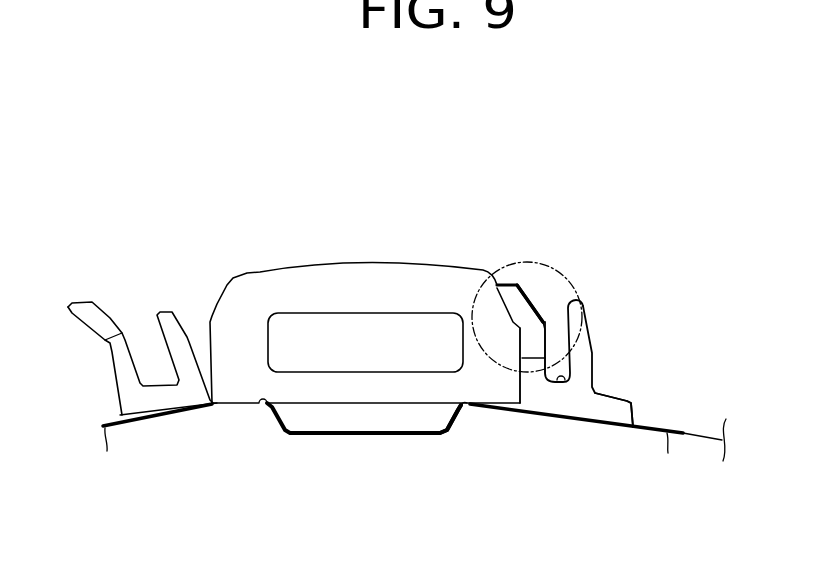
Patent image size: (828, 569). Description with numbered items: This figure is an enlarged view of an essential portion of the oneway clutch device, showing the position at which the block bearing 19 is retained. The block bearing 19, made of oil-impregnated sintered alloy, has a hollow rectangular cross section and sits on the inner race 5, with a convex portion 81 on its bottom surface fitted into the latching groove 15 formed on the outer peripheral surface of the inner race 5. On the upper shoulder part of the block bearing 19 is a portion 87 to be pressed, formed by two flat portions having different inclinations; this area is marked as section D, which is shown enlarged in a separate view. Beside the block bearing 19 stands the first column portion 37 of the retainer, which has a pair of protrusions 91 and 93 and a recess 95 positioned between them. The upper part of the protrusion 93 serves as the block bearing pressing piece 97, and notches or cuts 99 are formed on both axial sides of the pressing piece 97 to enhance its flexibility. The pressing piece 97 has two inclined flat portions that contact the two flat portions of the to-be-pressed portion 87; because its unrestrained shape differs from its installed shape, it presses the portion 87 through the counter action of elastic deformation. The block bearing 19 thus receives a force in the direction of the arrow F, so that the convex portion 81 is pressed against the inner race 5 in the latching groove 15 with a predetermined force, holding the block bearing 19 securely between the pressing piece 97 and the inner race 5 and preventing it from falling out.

The inner race 5 is at (217, 482).
The block bearing 19 is at (335, 263).
The latching groove 15 is at (357, 425).
The convex portion 81 is at (430, 414).
The portion to be pressed 87 is at (506, 283).
The block bearing pressing piece 97 is at (533, 293).
The notches or cuts 99 is at (542, 322).
The protrusion 93 is at (537, 383).
The recess 95 is at (568, 345).
The first column portion 37 is at (618, 367).
The protrusion 91 is at (580, 364).
The section D is at (570, 275).
The arrow F is at (450, 323).